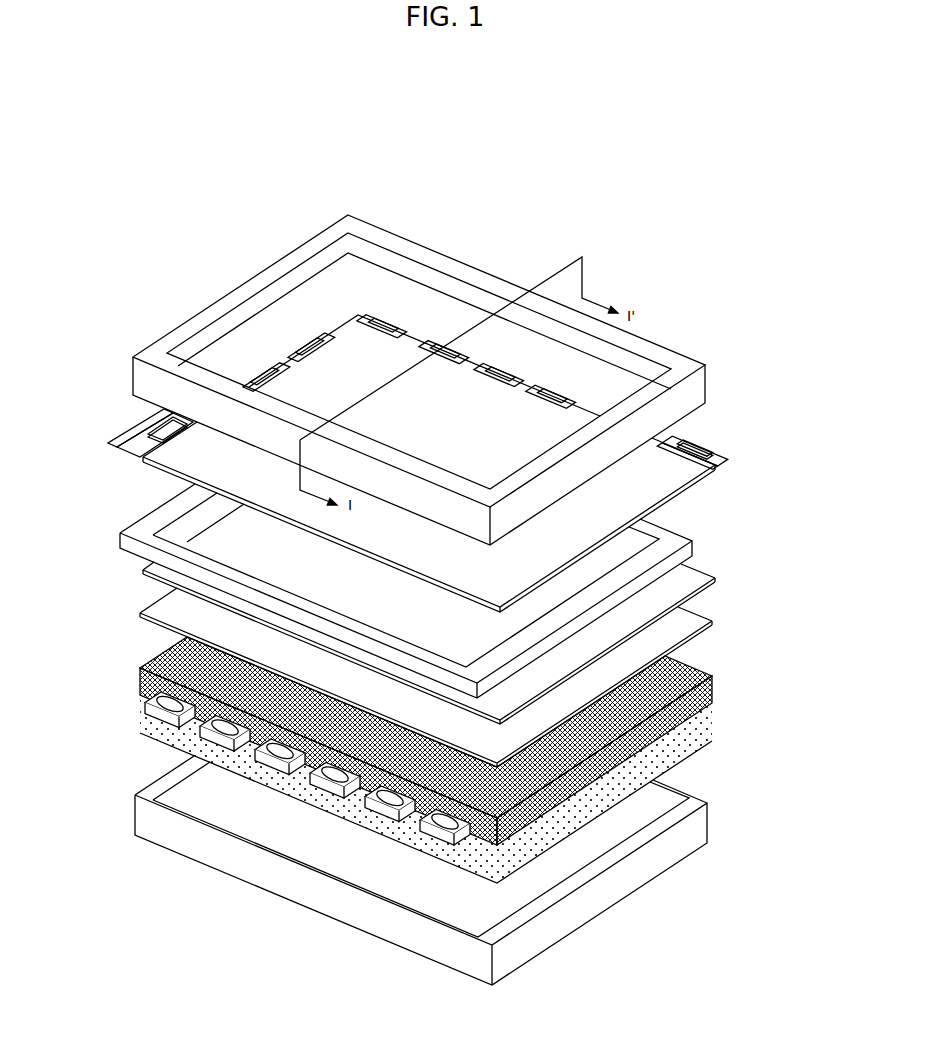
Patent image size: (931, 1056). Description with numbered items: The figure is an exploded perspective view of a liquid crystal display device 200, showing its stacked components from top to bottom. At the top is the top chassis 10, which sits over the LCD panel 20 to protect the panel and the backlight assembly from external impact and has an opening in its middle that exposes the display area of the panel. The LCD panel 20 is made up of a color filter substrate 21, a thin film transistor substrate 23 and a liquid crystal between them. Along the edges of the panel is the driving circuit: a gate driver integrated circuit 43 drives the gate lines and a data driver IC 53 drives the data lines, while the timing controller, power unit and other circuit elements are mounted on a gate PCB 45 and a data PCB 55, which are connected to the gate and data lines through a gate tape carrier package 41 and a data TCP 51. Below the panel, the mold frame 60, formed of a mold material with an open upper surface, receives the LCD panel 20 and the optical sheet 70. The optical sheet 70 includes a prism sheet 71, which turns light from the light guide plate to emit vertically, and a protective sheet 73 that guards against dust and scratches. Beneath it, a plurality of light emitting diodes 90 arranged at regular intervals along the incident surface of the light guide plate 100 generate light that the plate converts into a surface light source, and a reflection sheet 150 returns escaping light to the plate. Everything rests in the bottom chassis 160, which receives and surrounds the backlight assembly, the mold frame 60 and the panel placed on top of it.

The liquid crystal display device 200 is at (72, 182).
The top chassis 10 is at (705, 385).
The LCD panel 20 is at (499, 463).
The color filter substrate 21 is at (690, 487).
The thin film transistor substrate 23 is at (698, 466).
The gate tape carrier package 41 is at (148, 428).
The gate driver integrated circuit 43 is at (118, 447).
The gate printed circuit board 45 is at (118, 457).
The data tape carrier package 51 is at (705, 440).
The data driver IC 53 is at (690, 434).
The data printed circuit board 55 is at (715, 448).
The mold frame 60 is at (705, 541).
The optical sheet 70 is at (497, 664).
The prism sheet 71 is at (710, 623).
The protective sheet 73 is at (714, 580).
The light emitting diodes 90 is at (143, 708).
The light guide plate 100 is at (140, 660).
The reflection sheet 150 is at (698, 767).
The bottom chassis 160 is at (135, 808).